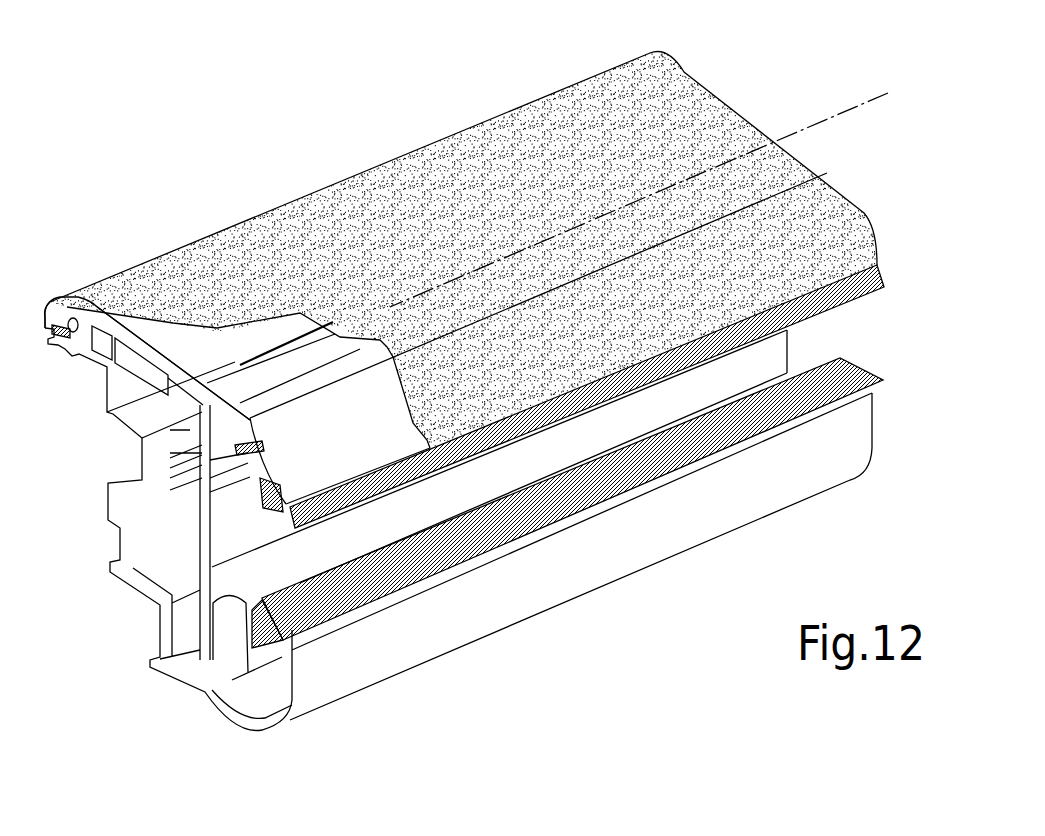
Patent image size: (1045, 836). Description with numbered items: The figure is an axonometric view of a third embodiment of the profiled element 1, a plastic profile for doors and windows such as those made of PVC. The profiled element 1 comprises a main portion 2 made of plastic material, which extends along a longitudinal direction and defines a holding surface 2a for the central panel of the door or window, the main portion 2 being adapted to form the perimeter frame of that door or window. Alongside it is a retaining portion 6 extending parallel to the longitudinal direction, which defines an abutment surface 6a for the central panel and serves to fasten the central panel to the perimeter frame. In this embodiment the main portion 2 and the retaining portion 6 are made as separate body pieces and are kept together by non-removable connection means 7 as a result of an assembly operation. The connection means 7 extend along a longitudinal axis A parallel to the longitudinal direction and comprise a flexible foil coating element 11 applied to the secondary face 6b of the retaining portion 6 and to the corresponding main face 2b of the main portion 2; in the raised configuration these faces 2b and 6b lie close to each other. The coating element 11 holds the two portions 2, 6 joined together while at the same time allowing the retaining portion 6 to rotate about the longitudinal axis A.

The profiled element 1 is at (110, 703).
The main portion 2 is at (108, 518).
The holding surface 2a is at (210, 600).
The main face 2b is at (175, 345).
The retaining portion 6 is at (240, 450).
The abutment surface 6a is at (262, 485).
The secondary face 6b is at (303, 430).
The non-removable connection means 7 is at (744, 108).
The flexible foil coating element 11 is at (687, 93).
The longitudinal axis A is at (851, 109).